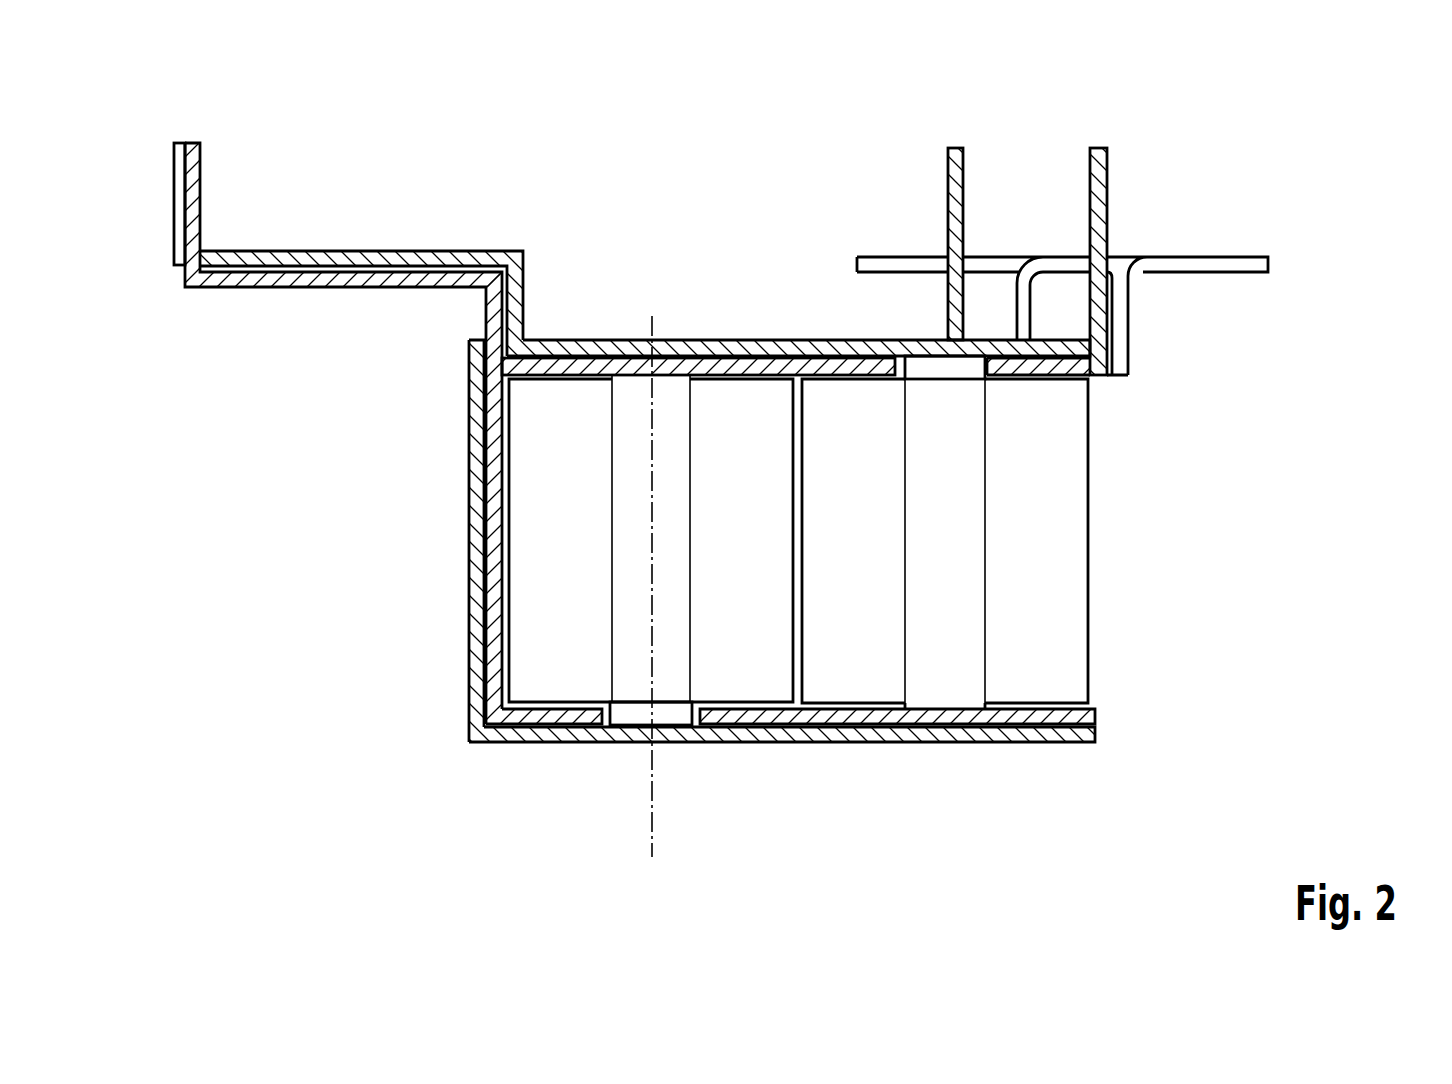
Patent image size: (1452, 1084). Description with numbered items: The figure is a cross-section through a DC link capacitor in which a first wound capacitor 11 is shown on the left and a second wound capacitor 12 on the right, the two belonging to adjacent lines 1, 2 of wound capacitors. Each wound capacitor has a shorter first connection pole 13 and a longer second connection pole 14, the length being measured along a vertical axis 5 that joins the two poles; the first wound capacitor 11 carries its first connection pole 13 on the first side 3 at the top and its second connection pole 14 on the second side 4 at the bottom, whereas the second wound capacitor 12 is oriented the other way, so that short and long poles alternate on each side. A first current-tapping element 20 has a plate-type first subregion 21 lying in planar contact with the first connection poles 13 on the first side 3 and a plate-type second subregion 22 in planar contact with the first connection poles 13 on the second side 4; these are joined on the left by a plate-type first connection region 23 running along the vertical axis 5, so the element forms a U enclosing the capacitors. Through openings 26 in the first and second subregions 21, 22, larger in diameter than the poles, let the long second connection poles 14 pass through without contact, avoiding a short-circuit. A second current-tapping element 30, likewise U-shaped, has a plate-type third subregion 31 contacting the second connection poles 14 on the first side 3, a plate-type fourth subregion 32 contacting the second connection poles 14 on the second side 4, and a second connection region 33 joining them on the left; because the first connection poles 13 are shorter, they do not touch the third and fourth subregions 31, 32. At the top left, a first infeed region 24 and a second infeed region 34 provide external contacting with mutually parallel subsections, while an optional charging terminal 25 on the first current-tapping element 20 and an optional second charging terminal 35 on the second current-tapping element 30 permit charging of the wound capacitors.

The line 1 is at (651, 646).
The line 2 is at (945, 646).
The first side 3 is at (645, 269).
The second side 4 is at (742, 579).
The vertical axis 5 is at (653, 847).
The first wound capacitor 11 is at (548, 665).
The second wound capacitor 12 is at (1038, 680).
The first connection pole 13 is at (632, 378).
The second connection pole 14 is at (923, 368).
The first current-tapping element 20 is at (687, 481).
The first subregion 21 is at (703, 368).
The second subregion 22 is at (808, 716).
The first connection region 23 is at (495, 602).
The first infeed region 24 is at (342, 277).
The charging terminal 25 is at (1100, 152).
The through opening 26 is at (1007, 364).
The second current-tapping element 30 is at (700, 501).
The third subregion 31 is at (790, 349).
The fourth subregion 32 is at (875, 733).
The second connection region 33 is at (473, 540).
The second infeed region 34 is at (340, 256).
The second charging terminal 35 is at (955, 152).